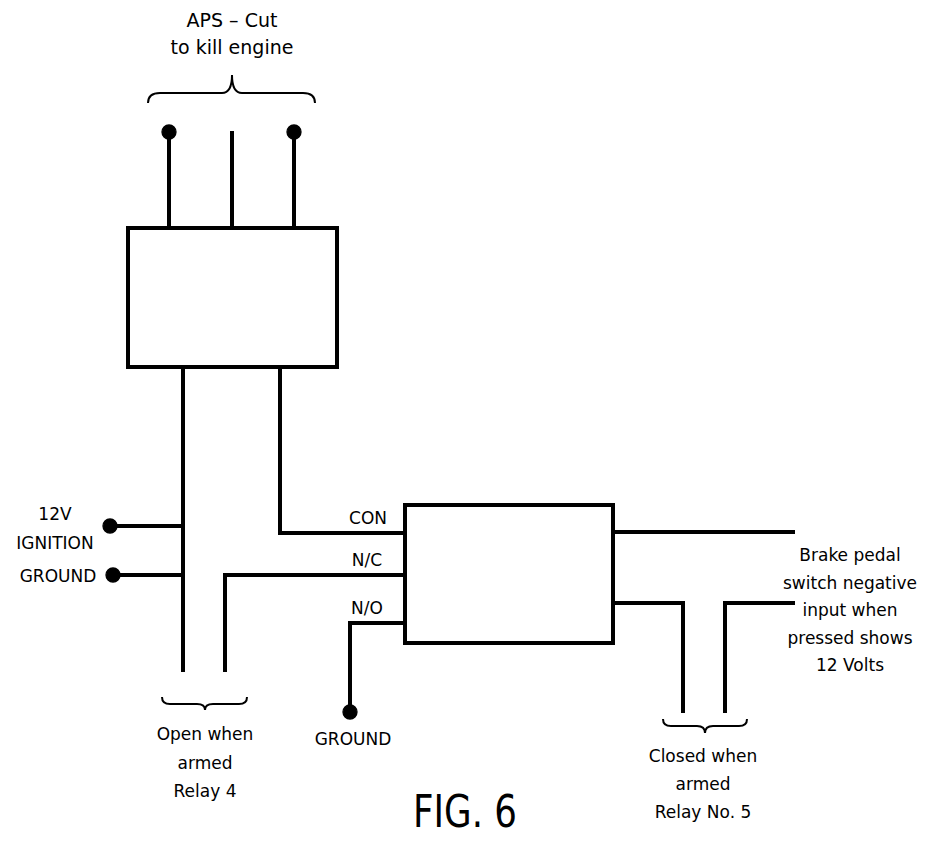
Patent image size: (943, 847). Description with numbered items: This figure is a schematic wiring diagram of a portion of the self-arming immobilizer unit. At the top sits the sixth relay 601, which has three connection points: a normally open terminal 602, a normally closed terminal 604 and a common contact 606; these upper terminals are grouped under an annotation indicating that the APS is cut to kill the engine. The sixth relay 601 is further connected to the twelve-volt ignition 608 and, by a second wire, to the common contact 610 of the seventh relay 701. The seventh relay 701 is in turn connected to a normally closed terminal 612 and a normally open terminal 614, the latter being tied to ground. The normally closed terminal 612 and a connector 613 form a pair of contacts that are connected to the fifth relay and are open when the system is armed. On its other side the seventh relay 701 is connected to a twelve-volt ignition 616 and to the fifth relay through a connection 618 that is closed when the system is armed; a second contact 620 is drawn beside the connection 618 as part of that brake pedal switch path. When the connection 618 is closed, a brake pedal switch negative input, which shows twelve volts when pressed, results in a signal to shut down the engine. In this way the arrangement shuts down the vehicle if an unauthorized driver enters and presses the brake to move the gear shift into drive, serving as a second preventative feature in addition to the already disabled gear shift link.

The relay no. 6 601 is at (160, 367).
The N/O 602 is at (168, 215).
The N/C 604 is at (232, 145).
The contact 606 is at (294, 185).
The 12V ignition 608 is at (183, 450).
The contact 610 is at (280, 448).
The N/C 612 is at (308, 577).
The connector 613 is at (183, 615).
The N/O 614 is at (352, 663).
The 12V ignition 616 is at (655, 532).
The connection 618 is at (683, 658).
The brake switch contact 620 is at (725, 655).
The relay no. 7 701 is at (510, 505).